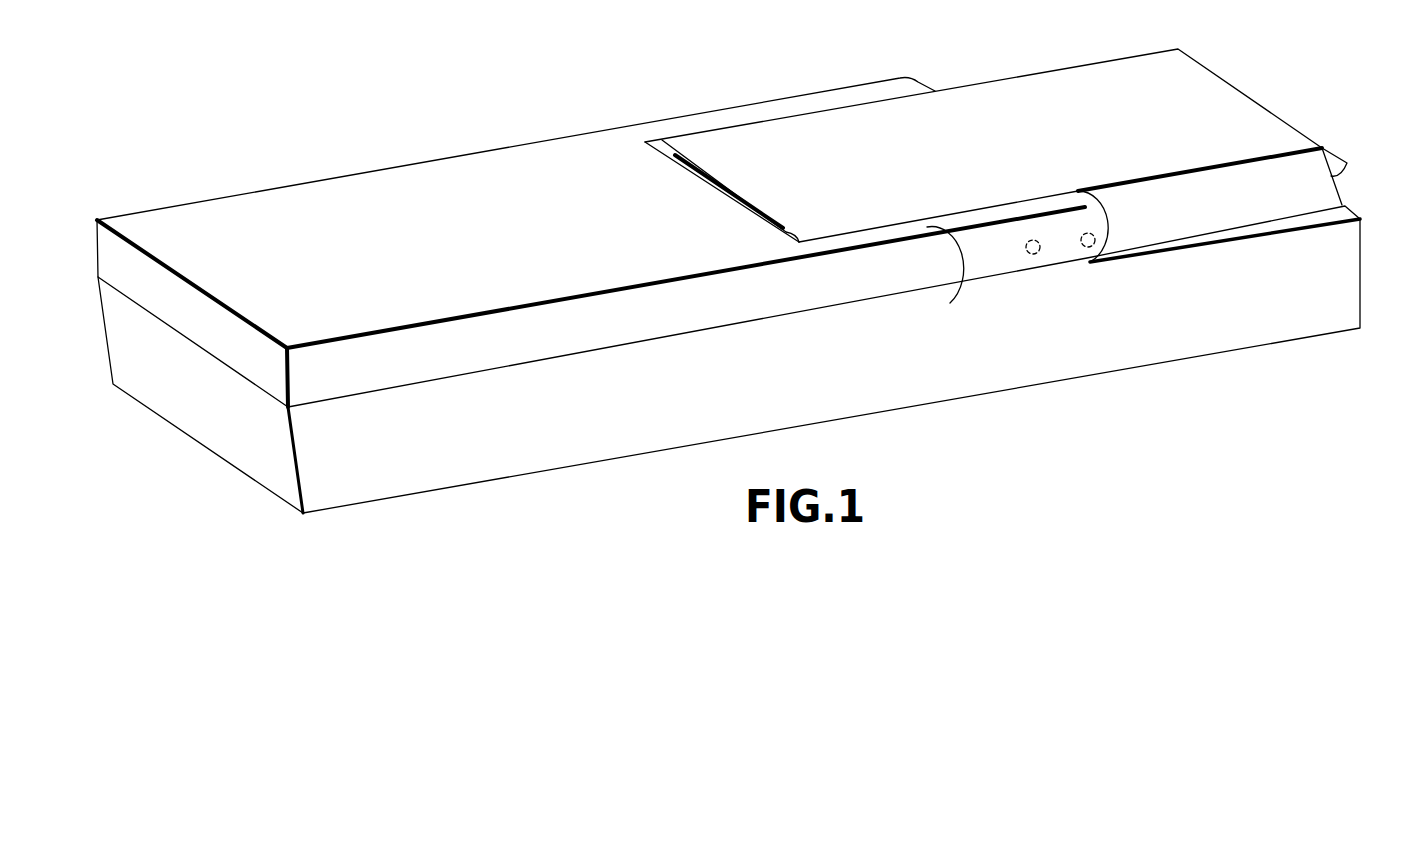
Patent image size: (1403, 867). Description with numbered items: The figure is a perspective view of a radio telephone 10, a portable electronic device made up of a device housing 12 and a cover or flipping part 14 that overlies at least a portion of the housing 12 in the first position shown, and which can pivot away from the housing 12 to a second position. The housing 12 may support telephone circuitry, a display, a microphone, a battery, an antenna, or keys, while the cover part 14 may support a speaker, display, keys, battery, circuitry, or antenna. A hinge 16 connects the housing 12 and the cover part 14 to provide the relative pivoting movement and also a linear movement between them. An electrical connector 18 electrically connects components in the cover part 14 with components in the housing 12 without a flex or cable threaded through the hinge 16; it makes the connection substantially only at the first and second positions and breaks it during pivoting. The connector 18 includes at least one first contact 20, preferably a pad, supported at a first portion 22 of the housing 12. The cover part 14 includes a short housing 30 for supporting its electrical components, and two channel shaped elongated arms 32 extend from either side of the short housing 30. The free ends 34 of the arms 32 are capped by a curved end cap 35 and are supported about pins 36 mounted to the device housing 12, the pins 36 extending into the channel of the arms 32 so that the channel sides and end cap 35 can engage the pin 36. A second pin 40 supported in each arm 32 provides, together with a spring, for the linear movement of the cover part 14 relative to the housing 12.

The radio telephone 10 is at (764, 66).
The device housing 12 is at (537, 470).
The cover part 14 is at (397, 172).
The hinge 16 is at (1076, 220).
The electrical connector 18 is at (746, 177).
The first contact 20 is at (698, 165).
The first portion 22 is at (770, 209).
The short housing 30 is at (382, 318).
The elongated arm 32 is at (950, 303).
The free end 34 is at (1074, 287).
The curved end cap 35 is at (1118, 218).
The pin 36 is at (1093, 250).
The second pin 40 is at (1028, 241).